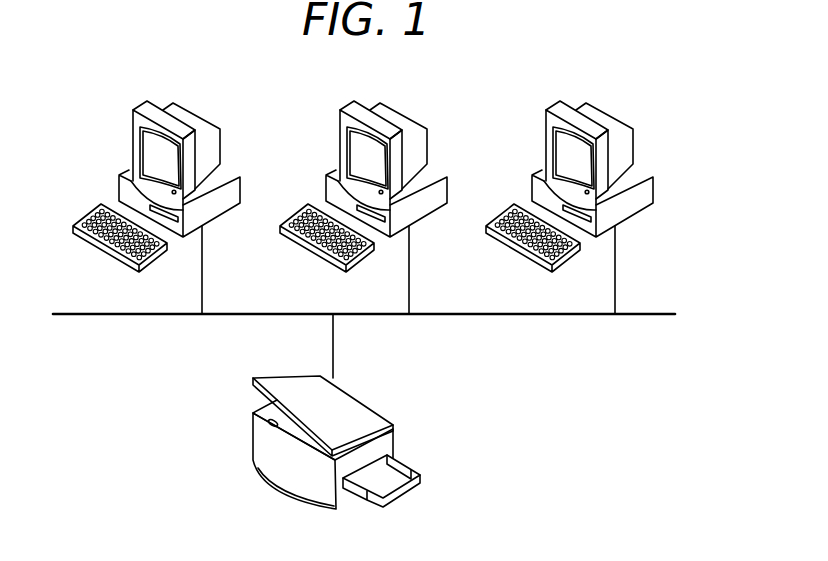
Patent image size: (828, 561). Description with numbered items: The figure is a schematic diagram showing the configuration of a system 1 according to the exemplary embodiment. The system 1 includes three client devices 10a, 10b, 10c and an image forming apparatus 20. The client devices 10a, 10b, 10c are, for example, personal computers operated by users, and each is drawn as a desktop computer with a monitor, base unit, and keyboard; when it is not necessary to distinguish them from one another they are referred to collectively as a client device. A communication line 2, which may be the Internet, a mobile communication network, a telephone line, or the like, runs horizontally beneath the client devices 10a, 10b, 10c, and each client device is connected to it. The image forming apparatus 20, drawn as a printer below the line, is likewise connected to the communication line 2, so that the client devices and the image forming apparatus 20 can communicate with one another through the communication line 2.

The system 1 is at (554, 408).
The client device 10a is at (230, 167).
The client device 10b is at (437, 167).
The client device 10c is at (643, 167).
The communication line 2 is at (157, 316).
The image forming apparatus 20 is at (384, 416).